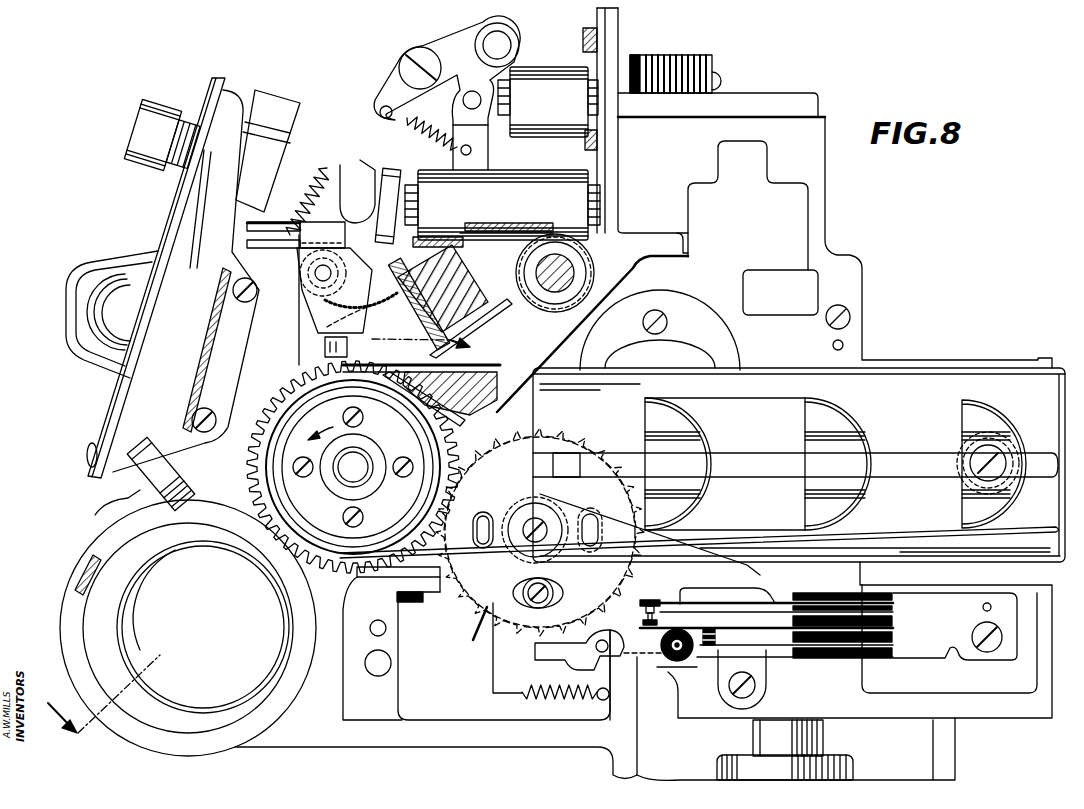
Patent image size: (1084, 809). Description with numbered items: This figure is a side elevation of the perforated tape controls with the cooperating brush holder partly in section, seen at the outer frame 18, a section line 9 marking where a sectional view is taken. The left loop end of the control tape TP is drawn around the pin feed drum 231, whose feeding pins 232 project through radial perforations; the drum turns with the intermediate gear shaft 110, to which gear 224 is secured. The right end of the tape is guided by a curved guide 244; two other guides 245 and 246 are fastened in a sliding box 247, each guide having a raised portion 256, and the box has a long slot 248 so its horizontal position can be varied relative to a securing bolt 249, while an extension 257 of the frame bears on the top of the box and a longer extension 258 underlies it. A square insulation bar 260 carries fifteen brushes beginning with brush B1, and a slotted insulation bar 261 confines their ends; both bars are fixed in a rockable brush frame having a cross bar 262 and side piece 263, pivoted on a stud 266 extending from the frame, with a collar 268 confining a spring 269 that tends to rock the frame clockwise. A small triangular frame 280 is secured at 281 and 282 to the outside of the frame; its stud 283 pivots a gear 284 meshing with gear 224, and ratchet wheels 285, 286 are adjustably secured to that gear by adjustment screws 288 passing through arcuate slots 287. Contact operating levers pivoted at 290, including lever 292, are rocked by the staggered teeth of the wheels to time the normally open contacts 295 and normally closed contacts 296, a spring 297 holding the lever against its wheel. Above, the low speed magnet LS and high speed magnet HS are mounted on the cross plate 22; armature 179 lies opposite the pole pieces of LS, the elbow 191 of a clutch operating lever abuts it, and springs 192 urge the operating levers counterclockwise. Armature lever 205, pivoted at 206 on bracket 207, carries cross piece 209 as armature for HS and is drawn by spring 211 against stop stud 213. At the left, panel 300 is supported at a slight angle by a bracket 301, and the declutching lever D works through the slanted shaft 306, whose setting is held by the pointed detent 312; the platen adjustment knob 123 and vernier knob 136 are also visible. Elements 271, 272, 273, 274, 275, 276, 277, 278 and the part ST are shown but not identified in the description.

The section line 9- 9 is at (267, 549).
The outer frame 18 is at (818, 218).
The cross plate 22 is at (610, 50).
The bracket 207 is at (578, 15).
The interposer magnet HS is at (548, 102).
The low speed control magnet LS is at (502, 205).
The cross bar 262 is at (507, 227).
The spring 269 is at (513, 232).
The cross piece 209 is at (477, 60).
The pivot 206 is at (476, 36).
The stop stud 213 is at (415, 60).
The spring 211 is at (405, 128).
The armature lever 205 is at (480, 133).
The raised elbow 191 is at (377, 182).
The armature 179 is at (393, 177).
The springs 192 is at (327, 168).
The plate 275 is at (250, 223).
The plate 274 is at (250, 247).
The lever 272 is at (318, 277).
The rod 271 is at (302, 337).
The bracket 273 is at (327, 348).
The toothed segment 276 is at (377, 307).
The square insulation bar 260 is at (450, 263).
The brush B1 is at (447, 308).
The slotted insulation bar 261 is at (500, 365).
The gear 224 is at (456, 437).
The stud 266 is at (574, 273).
The collar 268 is at (583, 247).
The side piece 263 is at (577, 318).
The flange 277 is at (683, 238).
The screw 278 is at (665, 310).
The panel 300 is at (117, 378).
The bracket 301 is at (140, 398).
The switch ST is at (160, 110).
The declutching lever D is at (113, 270).
The slanted shaft 306 is at (133, 483).
The pointed detent 312 is at (75, 587).
The vernier knob 136 is at (87, 607).
The platen adjustment knob 123 is at (110, 617).
The metallic drum 231 is at (267, 485).
The intermediate gear shaft 110 is at (353, 467).
The feeding pins 232 is at (263, 413).
The ratchet wheel 285 is at (475, 622).
The stud 283 is at (517, 563).
The ratchet wheel 286 is at (487, 607).
The arcuate slots 287 is at (563, 587).
The adjustment screws 288 is at (548, 602).
The gear 284 is at (535, 455).
The contacts 296 is at (713, 637).
The small triangular frame 280 is at (503, 668).
The spring 297 is at (533, 698).
The pivot 290 is at (605, 650).
The contact operating lever 292 is at (575, 652).
The contacts 295 is at (670, 600).
The securing point 282 is at (990, 650).
The securing point 281 is at (755, 690).
The control tape TP is at (737, 397).
The extension 257 is at (1040, 358).
The sliding box 247 is at (1063, 390).
The curved guide 245 is at (697, 423).
The raised portion 256 is at (813, 512).
The curved guide 244 is at (827, 407).
The long slot 248 is at (923, 443).
The curved guide 246 is at (1003, 415).
The securing bolt 249 is at (1007, 477).
The extension 258 is at (983, 573).